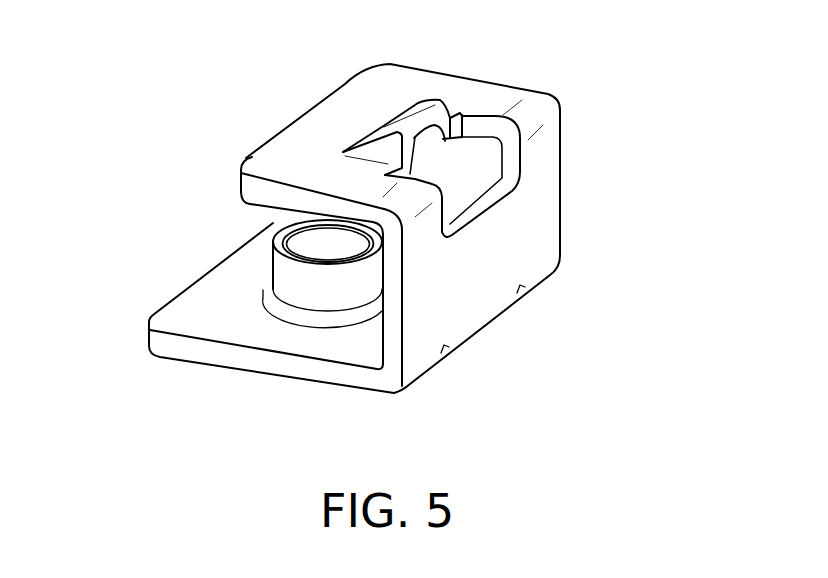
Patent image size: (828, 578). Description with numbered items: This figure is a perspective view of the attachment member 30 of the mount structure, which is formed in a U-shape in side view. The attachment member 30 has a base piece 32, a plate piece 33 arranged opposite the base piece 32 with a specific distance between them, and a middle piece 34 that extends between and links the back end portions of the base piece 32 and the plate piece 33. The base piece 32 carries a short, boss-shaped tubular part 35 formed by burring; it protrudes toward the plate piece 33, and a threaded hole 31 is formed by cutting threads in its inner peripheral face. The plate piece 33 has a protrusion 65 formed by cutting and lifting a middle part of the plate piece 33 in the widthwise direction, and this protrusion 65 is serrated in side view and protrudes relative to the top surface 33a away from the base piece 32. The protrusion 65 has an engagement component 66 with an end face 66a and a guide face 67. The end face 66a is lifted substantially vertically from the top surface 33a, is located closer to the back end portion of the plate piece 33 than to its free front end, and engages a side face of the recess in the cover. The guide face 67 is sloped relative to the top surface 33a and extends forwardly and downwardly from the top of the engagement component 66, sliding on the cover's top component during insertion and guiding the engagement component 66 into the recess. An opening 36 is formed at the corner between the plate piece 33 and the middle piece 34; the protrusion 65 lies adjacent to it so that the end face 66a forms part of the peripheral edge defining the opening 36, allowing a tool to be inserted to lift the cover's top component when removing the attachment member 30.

The attachment member 30 is at (505, 61).
The threaded hole 31 is at (297, 243).
The base piece 32 is at (233, 370).
The plate piece 33 is at (273, 141).
The top surface 33a is at (257, 175).
The middle piece 34 is at (553, 205).
The tubular part 35 is at (273, 272).
The opening 36 is at (465, 210).
The protrusion 65 is at (428, 82).
The engagement component 66 is at (464, 112).
The end face 66a is at (425, 128).
The guide face 67 is at (374, 124).